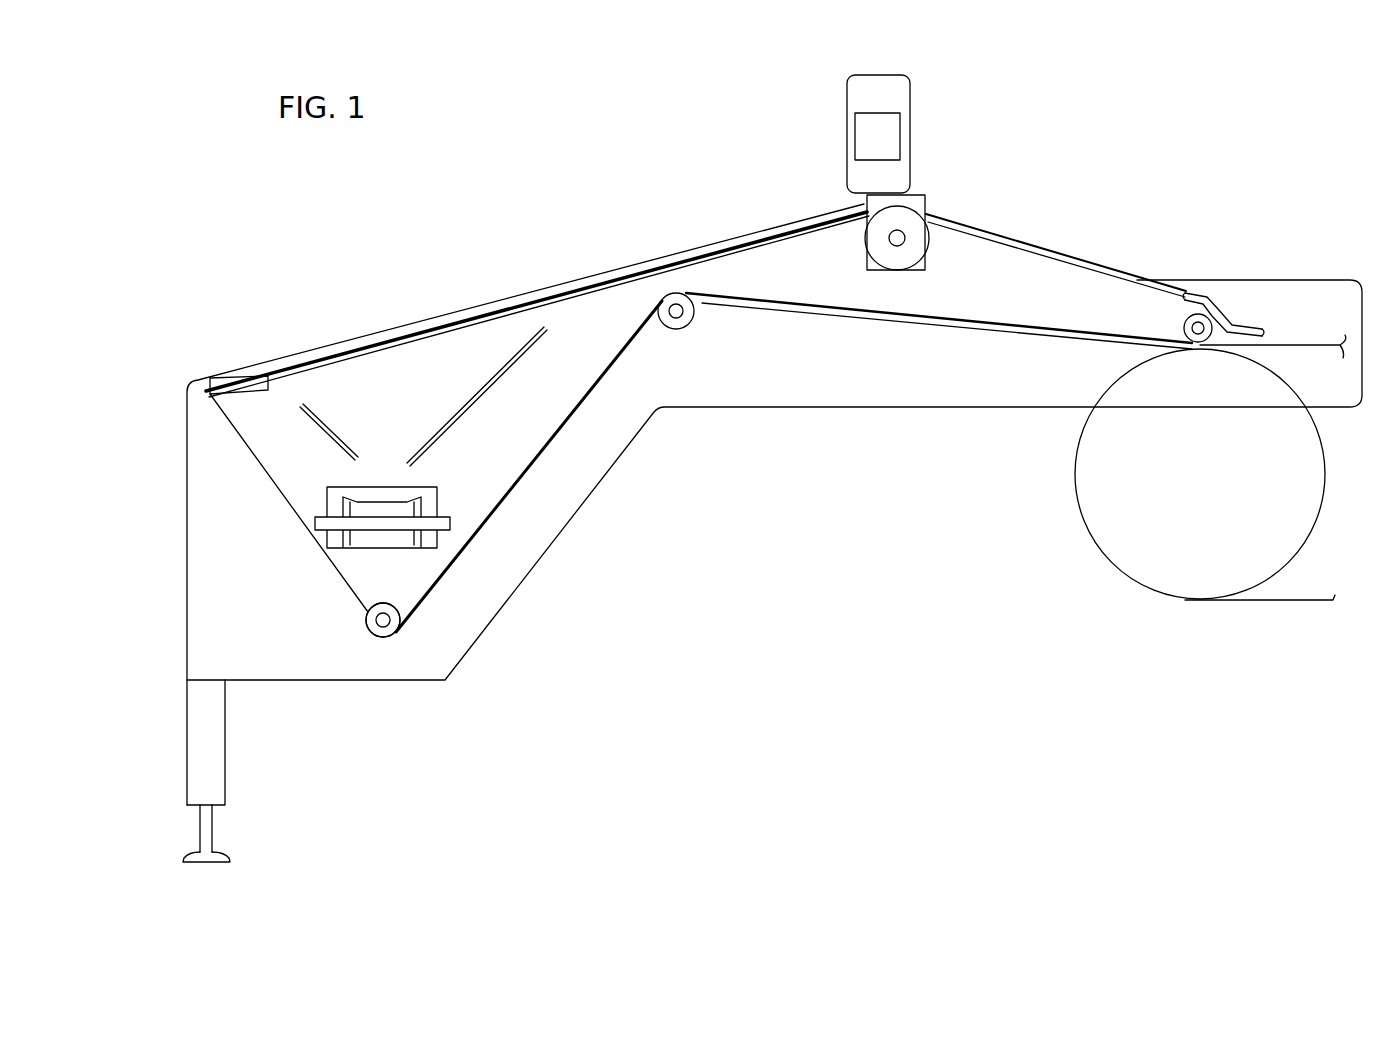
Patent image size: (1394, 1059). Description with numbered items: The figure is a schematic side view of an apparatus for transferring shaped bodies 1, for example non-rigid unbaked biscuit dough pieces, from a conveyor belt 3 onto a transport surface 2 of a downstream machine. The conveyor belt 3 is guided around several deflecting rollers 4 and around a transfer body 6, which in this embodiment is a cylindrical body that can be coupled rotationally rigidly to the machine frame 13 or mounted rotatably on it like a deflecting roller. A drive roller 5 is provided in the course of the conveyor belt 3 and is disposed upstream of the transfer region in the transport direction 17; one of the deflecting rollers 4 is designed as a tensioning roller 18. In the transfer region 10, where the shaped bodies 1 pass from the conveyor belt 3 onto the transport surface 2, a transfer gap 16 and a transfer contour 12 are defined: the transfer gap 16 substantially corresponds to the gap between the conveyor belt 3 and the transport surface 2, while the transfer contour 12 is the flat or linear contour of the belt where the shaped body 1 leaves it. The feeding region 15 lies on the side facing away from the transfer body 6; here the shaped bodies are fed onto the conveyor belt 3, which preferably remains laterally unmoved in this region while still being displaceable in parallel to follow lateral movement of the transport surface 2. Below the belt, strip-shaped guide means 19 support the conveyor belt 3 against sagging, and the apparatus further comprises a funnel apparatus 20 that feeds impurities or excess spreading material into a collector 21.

The shaped bodies 1 is at (1199, 316).
The transport surface 2 is at (1303, 345).
The conveyor belt 3 is at (652, 268).
The deflecting rollers 4 is at (680, 330).
The drive roller 5 is at (905, 230).
The transfer body 6 is at (1188, 300).
The transfer region 10 is at (1268, 282).
The transfer contour 12 is at (1217, 293).
The machine frame 13 is at (473, 625).
The feeding region 15 is at (248, 305).
The transfer gap 16 is at (1212, 322).
The transport direction 17 is at (1000, 172).
The tensioning roller 18 is at (362, 637).
The guide means 19 is at (980, 328).
The funnel apparatus 20 is at (315, 420).
The collector 21 is at (430, 533).